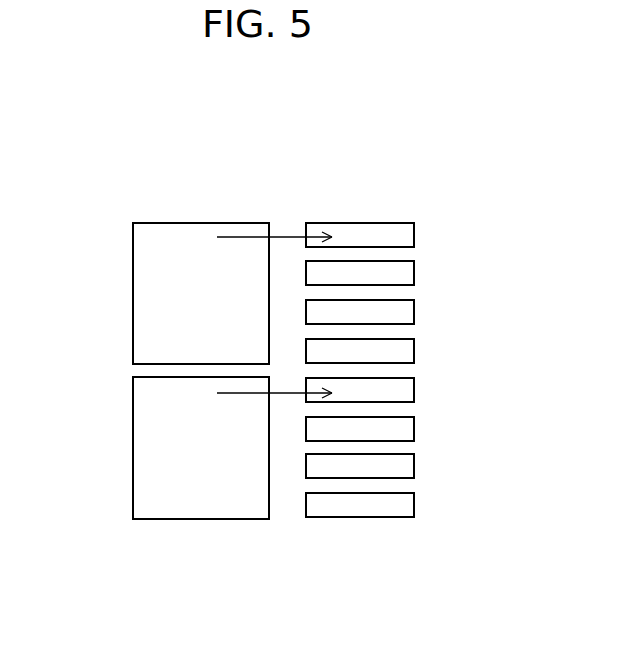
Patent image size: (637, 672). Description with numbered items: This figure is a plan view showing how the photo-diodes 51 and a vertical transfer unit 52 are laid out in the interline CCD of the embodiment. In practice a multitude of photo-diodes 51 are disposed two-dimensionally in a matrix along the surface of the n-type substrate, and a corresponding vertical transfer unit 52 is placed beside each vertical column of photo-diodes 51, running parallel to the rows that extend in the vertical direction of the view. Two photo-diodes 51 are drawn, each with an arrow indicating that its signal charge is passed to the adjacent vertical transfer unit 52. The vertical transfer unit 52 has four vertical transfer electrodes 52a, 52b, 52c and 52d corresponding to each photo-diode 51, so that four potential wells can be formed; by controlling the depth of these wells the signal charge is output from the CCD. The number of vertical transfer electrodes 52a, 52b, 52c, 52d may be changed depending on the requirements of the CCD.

The photo-diode 51 is at (170, 303).
The vertical transfer unit 52 is at (369, 214).
The vertical transfer electrode 52a is at (398, 233).
The vertical transfer electrode 52b is at (398, 271).
The vertical transfer electrode 52c is at (398, 310).
The vertical transfer electrode 52d is at (398, 349).